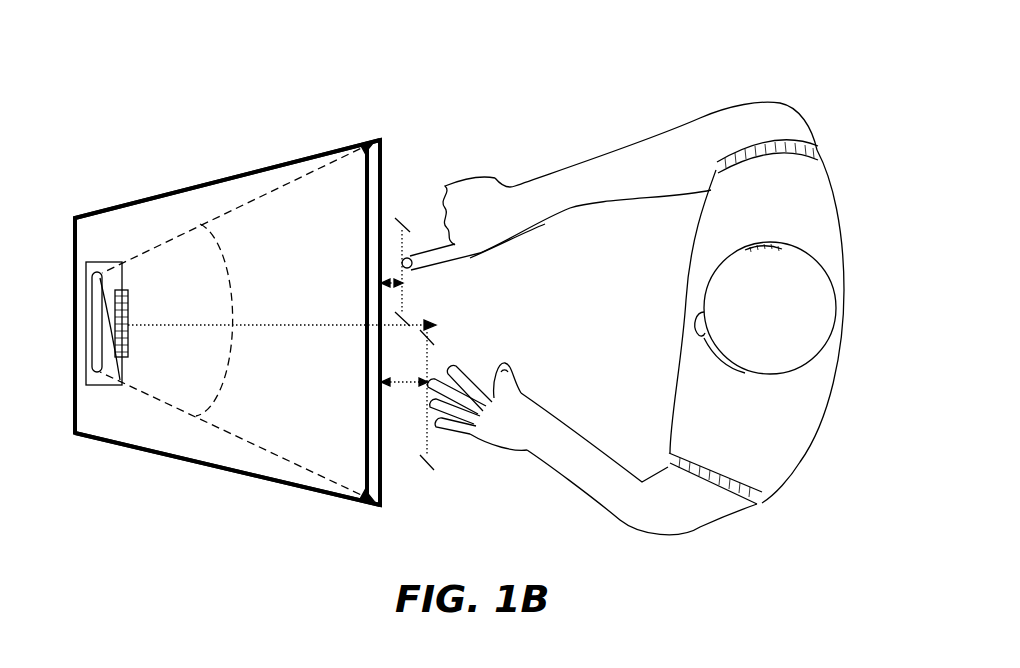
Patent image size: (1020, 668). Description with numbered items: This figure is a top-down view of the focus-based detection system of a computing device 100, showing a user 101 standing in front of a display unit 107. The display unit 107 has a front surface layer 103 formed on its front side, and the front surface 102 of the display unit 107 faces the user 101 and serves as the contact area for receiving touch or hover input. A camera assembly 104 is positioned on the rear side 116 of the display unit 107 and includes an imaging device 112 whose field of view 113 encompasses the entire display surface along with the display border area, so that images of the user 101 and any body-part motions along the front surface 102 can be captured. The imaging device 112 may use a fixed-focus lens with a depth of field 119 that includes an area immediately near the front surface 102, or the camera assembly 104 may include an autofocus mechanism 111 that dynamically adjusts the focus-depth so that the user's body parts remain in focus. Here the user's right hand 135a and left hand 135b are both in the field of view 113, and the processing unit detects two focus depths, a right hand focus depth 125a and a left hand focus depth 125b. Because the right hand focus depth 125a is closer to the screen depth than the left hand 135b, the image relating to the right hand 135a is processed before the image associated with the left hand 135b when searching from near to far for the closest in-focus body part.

The computing device 100 is at (148, 49).
The user 101 is at (838, 220).
The front surface 102 is at (391, 164).
The front surface layer 103 is at (237, 479).
The camera assembly 104 is at (85, 268).
The display unit 107 is at (378, 510).
The autofocus mechanism 111 is at (98, 387).
The imaging device 112 is at (93, 300).
The field of view 113 is at (240, 352).
The rear side 116 is at (87, 235).
The depth of field 119 is at (263, 325).
The right hand focus depth 125a is at (403, 283).
The left hand focus depth 125b is at (408, 383).
The right hand 135a is at (502, 190).
The left hand 135b is at (512, 453).